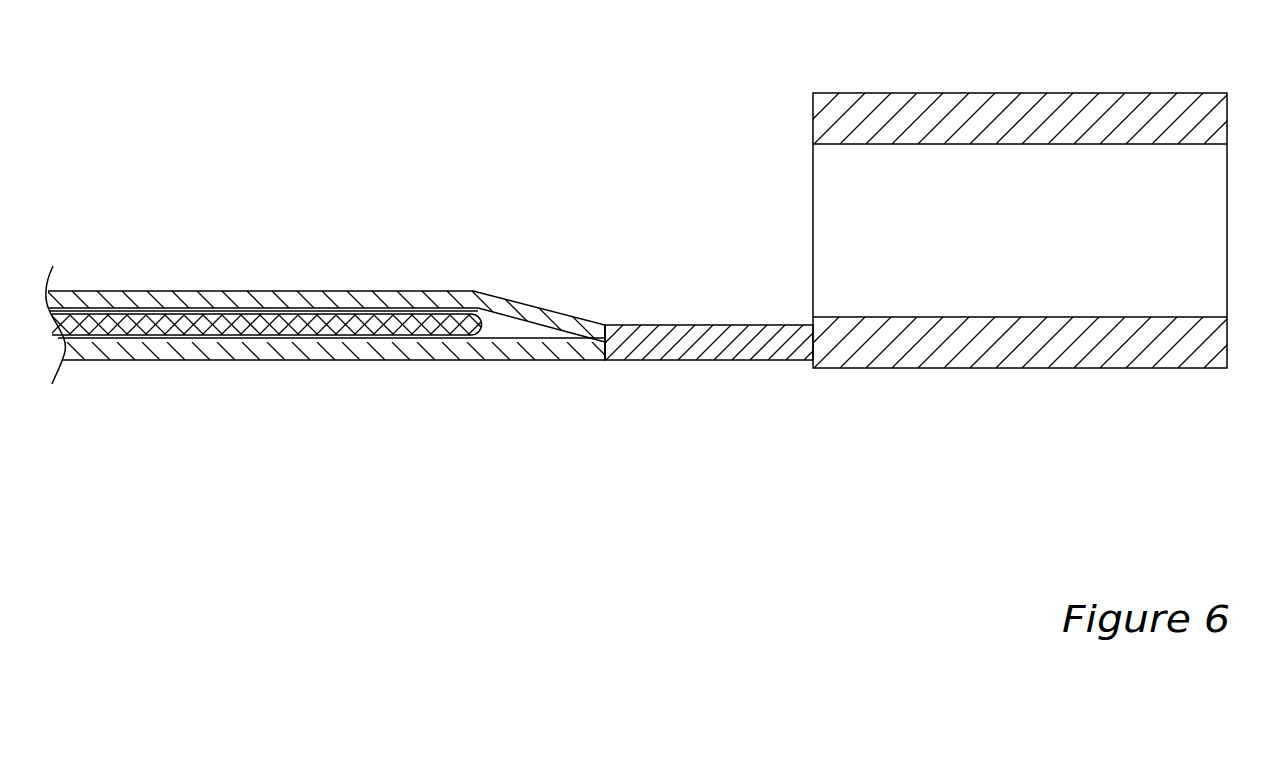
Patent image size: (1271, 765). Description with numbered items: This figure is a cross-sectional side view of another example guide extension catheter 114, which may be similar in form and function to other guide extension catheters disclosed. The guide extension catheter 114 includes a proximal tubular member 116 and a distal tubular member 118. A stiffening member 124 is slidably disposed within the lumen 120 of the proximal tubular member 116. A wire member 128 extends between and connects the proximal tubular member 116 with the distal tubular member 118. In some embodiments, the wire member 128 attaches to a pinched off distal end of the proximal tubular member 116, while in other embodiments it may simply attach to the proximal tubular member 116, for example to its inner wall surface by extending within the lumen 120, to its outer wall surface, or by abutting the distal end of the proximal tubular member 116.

The guide extension catheter 114 is at (482, 136).
The proximal tubular member 116 is at (253, 298).
The distal tubular member 118 is at (1018, 93).
The lumen 120 is at (498, 330).
The stiffening member 124 is at (187, 325).
The wire member 128 is at (708, 342).